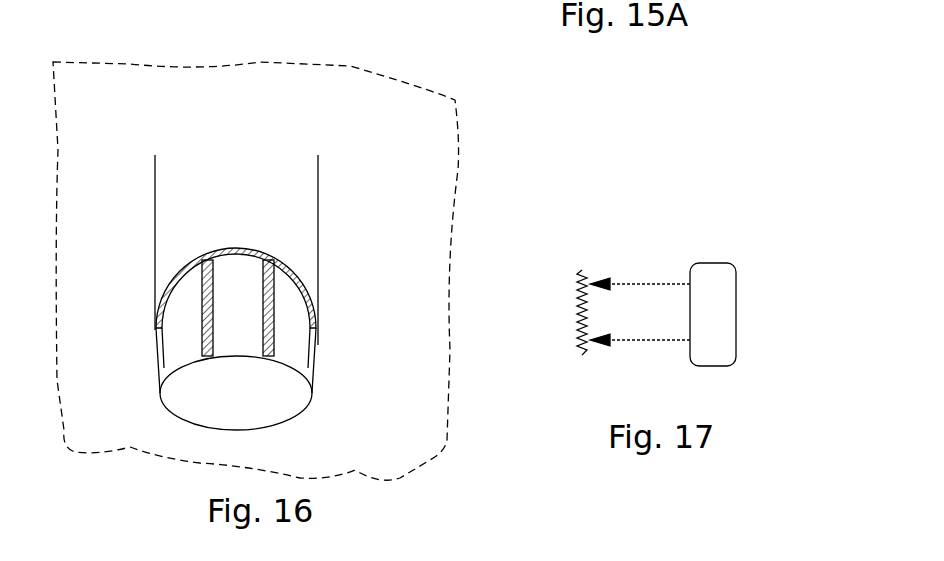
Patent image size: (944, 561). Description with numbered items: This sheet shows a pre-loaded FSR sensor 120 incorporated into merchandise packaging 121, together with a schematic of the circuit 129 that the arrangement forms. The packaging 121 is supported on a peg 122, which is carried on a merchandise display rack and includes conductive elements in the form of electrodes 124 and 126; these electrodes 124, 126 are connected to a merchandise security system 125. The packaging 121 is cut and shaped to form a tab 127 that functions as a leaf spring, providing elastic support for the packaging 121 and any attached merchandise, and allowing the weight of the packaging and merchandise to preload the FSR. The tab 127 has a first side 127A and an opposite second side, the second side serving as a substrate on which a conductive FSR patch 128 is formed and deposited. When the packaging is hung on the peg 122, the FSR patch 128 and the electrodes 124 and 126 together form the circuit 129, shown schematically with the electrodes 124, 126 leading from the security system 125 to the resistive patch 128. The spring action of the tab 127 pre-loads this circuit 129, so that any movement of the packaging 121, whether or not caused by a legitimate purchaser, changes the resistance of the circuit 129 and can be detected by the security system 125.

In FIG. 16, the pre-loaded FSR sensor 120 is at (120, 214).
In FIG. 16, the merchandise packaging 121 is at (437, 102).
In FIG. 16, the peg 122 is at (300, 404).
In FIG. 16, the electrode 124 is at (274, 331).
In FIG. 17, the electrode 124 is at (616, 348).
In FIG. 17, the merchandise security system 125 is at (730, 264).
In FIG. 16, the electrode 126 is at (202, 332).
In FIG. 17, the electrode 126 is at (620, 282).
In FIG. 16, the tab 127 is at (305, 195).
In FIG. 16, the first side 127A is at (260, 235).
In FIG. 16, the conductive FSR patch 128 is at (318, 312).
In FIG. 17, the conductive FSR patch 128 is at (582, 258).
In FIG. 17, the circuit 129 is at (660, 205).